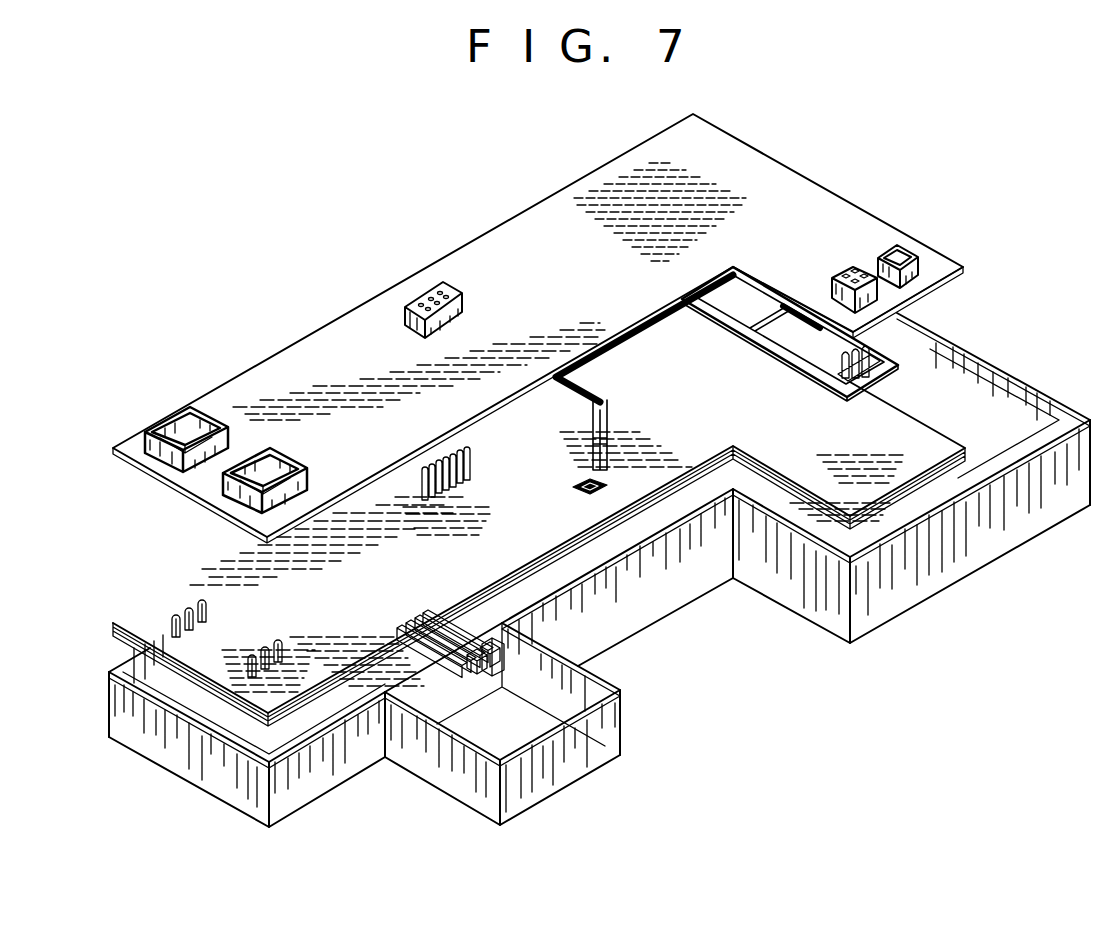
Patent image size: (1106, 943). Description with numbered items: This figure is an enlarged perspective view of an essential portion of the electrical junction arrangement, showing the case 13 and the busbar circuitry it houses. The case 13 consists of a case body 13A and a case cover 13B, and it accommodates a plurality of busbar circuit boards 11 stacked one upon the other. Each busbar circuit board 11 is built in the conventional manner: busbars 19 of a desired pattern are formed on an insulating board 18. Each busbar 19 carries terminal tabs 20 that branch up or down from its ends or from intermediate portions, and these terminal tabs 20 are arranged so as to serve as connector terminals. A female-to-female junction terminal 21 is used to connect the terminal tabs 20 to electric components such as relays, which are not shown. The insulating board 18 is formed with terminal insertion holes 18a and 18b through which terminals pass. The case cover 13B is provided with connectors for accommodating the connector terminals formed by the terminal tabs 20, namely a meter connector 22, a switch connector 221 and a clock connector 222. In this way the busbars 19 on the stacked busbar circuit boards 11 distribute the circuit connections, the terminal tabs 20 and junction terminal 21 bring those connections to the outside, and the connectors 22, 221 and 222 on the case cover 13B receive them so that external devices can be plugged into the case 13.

The busbar circuit board 11 is at (970, 464).
The case 13 is at (997, 198).
The case body 13A is at (968, 352).
The case cover 13B is at (913, 238).
The insulating board 18 is at (800, 467).
The terminal insertion hole 18a is at (207, 612).
The terminal insertion hole 18b is at (578, 488).
The busbar 19 is at (718, 330).
The terminal tab 20 is at (850, 378).
The female-to-female junction terminal 21 is at (608, 437).
The meter connector 22 is at (402, 305).
The switch connector 221 is at (866, 268).
The clock connector 222 is at (178, 412).